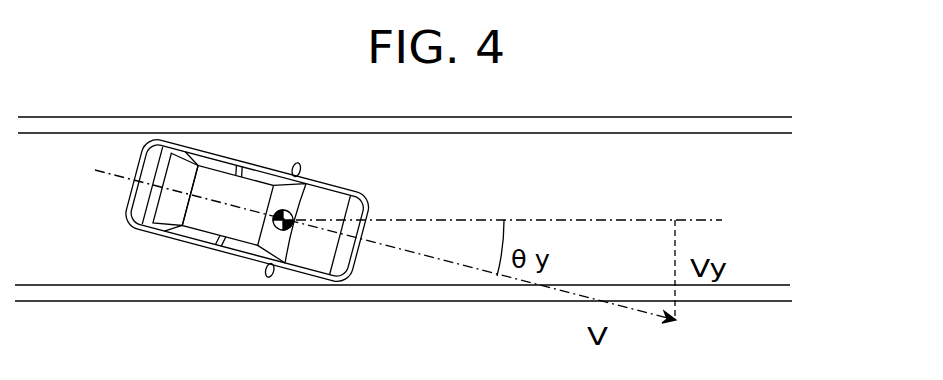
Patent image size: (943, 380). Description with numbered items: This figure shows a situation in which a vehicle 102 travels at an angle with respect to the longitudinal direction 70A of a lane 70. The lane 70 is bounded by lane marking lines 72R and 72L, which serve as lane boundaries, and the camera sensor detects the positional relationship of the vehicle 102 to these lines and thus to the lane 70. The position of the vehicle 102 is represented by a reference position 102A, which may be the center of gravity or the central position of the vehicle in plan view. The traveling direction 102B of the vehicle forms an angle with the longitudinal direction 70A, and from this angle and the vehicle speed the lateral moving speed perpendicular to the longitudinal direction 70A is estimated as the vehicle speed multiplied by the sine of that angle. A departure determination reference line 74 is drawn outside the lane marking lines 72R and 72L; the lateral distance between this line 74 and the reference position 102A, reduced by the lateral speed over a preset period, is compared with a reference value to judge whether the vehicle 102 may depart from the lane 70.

The lane 70 is at (763, 193).
The longitudinal direction of the lane 70A is at (560, 218).
The lane marking line 72L is at (470, 133).
The lane marking line 72R is at (100, 287).
The departure determination reference line 74 is at (680, 117).
The vehicle 102 is at (137, 228).
The reference position of the vehicle 102A is at (288, 268).
The traveling direction of the vehicle 102B is at (422, 256).